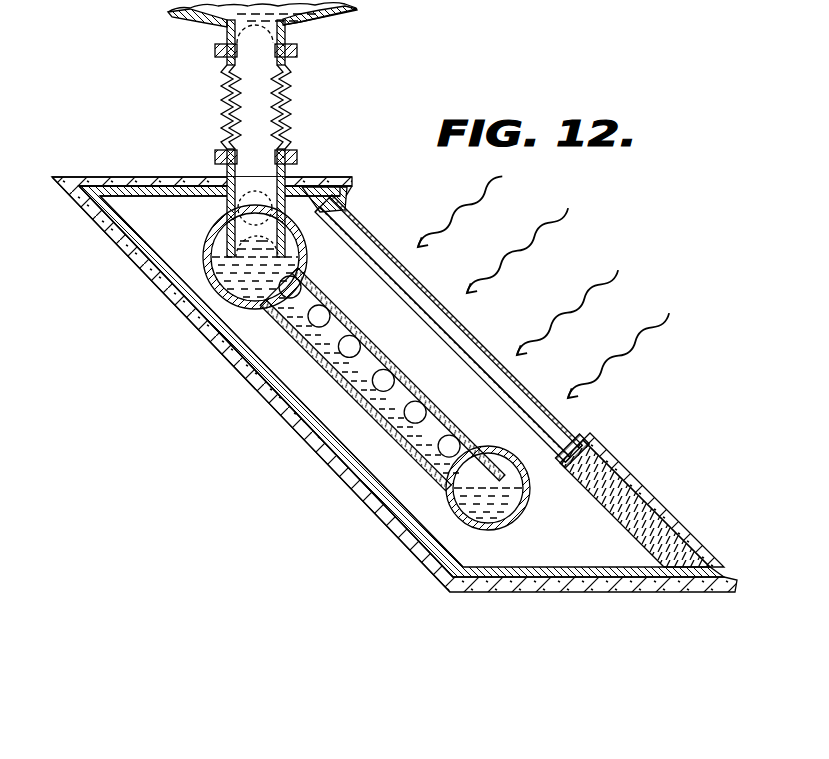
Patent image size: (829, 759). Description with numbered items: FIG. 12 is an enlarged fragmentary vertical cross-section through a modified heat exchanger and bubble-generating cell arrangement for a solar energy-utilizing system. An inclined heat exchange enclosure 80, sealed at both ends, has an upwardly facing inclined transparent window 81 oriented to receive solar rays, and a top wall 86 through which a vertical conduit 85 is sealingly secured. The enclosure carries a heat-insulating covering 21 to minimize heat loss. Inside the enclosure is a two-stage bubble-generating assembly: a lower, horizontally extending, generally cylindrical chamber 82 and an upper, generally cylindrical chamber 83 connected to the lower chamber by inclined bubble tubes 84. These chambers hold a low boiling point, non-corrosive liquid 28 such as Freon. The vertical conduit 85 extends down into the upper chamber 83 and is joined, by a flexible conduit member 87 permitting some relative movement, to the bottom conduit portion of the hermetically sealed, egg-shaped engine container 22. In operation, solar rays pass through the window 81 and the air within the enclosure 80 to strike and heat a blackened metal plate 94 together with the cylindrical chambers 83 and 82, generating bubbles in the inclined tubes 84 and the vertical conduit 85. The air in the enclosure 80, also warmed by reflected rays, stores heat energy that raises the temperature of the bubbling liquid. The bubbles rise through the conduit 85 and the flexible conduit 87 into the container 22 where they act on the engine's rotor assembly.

The hermetically sealed container 22 is at (352, 10).
The flexible conduit member 87 is at (290, 98).
The top wall 86 is at (177, 178).
The vertical conduit 85 is at (270, 182).
The upper cylindrical chamber 83 is at (208, 241).
The blackened metal plate 94 is at (360, 340).
The inclined bubble tubes 84 is at (392, 386).
The transparent window 81 is at (520, 383).
The liquid 28 is at (528, 497).
The lower cylindrical chamber 82 is at (497, 528).
The heat-insulating covering 21 is at (243, 380).
The inclined heat exchange enclosure 80 is at (376, 514).